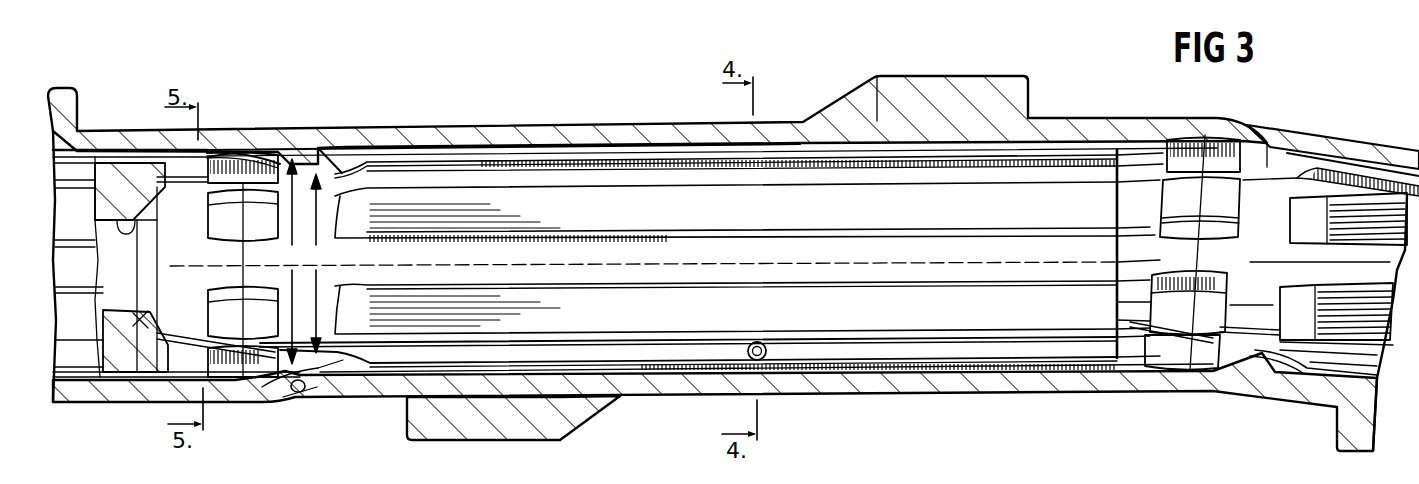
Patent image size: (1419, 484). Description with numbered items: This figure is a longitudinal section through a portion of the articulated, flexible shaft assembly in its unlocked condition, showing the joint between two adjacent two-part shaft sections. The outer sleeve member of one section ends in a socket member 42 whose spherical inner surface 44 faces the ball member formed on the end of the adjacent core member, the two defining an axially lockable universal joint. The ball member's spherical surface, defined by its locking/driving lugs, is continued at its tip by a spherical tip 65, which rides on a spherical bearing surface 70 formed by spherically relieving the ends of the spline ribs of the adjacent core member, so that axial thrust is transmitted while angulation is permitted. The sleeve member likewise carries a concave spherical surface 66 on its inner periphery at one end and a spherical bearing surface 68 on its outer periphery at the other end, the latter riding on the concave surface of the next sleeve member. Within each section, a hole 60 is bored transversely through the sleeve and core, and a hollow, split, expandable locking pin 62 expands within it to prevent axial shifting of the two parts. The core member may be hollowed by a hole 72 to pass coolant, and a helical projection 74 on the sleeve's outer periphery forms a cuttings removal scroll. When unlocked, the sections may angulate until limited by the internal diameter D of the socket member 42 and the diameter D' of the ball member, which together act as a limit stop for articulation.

The socket member 42 is at (238, 135).
The spherical inner surface 44 is at (258, 156).
The hole 60 is at (752, 378).
The locking pin 62 is at (757, 342).
The spherical tip 65 is at (140, 321).
The spherical concave surface 66 is at (301, 396).
The spherical bearing surface 68 is at (266, 400).
The spherical bearing surface 70 is at (128, 335).
The hole 72 is at (138, 226).
The helical projection 74 is at (521, 432).
The internal diameter of socket member D is at (293, 261).
The diameter of ball member D' is at (320, 263).